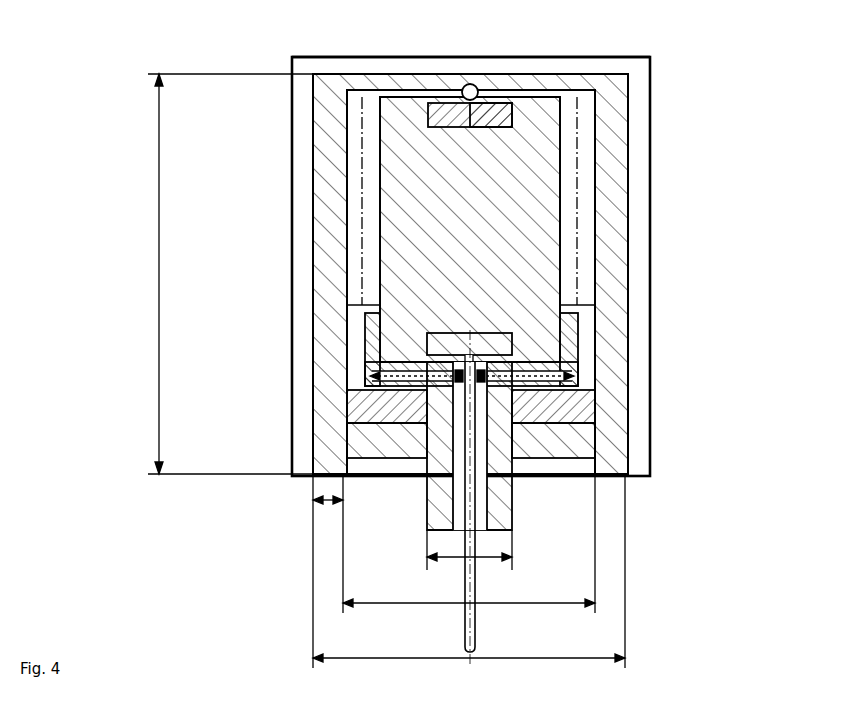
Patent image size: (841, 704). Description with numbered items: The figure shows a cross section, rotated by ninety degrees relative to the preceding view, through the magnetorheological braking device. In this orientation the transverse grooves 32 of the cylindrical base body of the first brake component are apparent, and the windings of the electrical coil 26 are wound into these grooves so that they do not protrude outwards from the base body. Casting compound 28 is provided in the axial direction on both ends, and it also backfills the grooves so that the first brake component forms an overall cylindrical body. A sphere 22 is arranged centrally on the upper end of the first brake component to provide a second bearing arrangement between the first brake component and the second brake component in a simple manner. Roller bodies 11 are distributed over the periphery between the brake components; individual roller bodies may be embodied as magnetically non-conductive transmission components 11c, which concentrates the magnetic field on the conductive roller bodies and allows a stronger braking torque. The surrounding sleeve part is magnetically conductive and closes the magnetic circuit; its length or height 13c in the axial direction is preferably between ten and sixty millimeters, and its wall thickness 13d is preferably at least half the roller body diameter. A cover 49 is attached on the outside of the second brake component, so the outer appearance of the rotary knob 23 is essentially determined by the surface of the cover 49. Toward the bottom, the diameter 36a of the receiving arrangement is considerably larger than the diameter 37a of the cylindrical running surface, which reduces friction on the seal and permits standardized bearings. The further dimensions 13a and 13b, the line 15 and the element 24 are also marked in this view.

The roller bodies 11 is at (592, 214).
The magnetically non-conductive transmission components 11c is at (353, 190).
The cavity width dimension 13a is at (410, 602).
The housing width dimension 13b is at (360, 656).
The length or height of the sleeve part 13c is at (223, 274).
The wall thickness of the sleeve part 13d is at (333, 503).
The axis line 15 is at (583, 138).
The sphere 22 is at (468, 84).
The rotary knob 23 is at (296, 62).
The side wall 24 is at (613, 291).
The electrical coil 26 is at (503, 112).
The casting compound 28 is at (438, 104).
The transverse grooves 32 is at (515, 345).
The diameter of the receiving arrangement 36a is at (372, 378).
The diameter of the cylindrical running surface 37a is at (478, 566).
The cover 49 is at (643, 432).